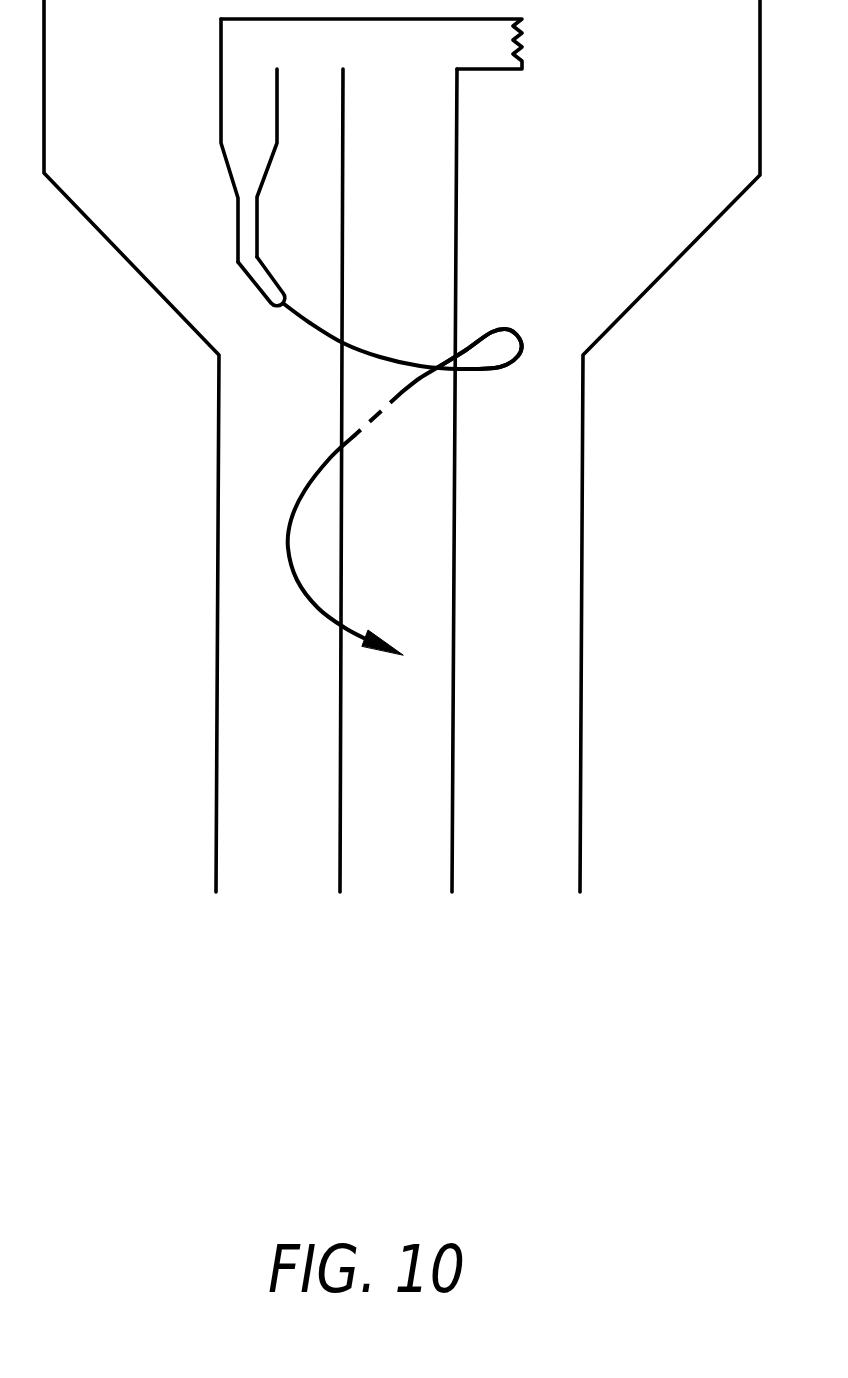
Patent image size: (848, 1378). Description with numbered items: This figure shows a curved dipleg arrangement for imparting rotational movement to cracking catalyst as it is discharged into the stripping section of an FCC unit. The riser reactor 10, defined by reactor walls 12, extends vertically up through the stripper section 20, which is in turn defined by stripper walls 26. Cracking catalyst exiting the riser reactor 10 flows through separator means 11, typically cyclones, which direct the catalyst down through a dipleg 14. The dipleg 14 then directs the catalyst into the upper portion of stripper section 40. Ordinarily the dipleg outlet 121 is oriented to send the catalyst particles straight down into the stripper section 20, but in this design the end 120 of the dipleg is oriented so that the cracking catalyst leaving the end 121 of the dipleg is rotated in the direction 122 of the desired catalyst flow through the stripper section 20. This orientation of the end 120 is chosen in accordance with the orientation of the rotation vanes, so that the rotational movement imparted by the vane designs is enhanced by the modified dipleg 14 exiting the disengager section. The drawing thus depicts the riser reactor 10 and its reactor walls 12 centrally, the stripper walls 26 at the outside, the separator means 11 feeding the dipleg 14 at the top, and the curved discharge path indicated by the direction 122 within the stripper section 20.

The riser reactor 10 is at (417, 804).
The separator means 11 is at (221, 90).
The reactor walls 12 is at (455, 673).
The dipleg 14 is at (237, 223).
The stripper section 20 is at (295, 770).
The stripper walls 26 is at (585, 490).
The upper portion of stripper section 40 is at (652, 127).
The end of the dipleg 120 is at (252, 290).
The dipleg outlet 121 is at (288, 297).
The direction of catalyst rotation 122 is at (382, 355).